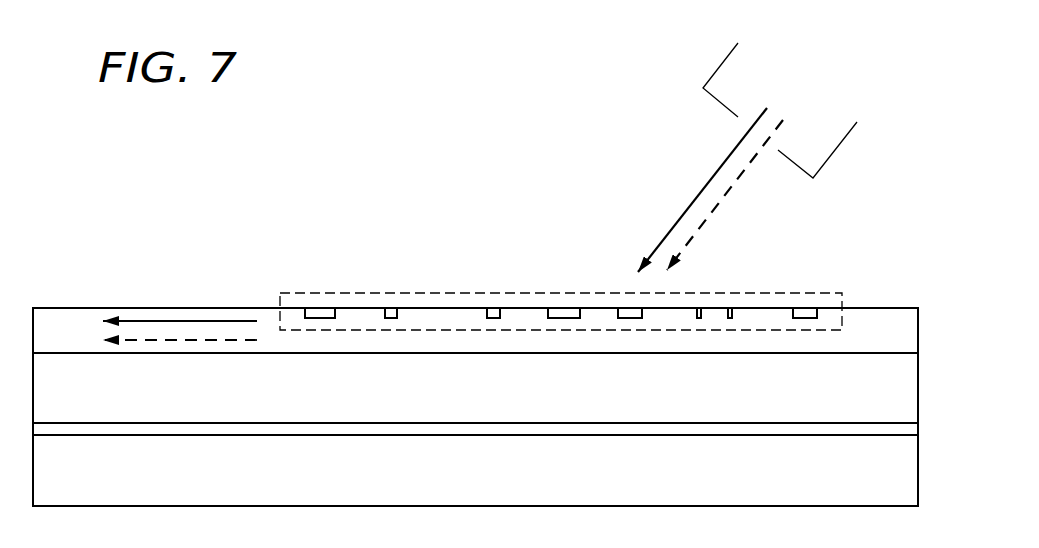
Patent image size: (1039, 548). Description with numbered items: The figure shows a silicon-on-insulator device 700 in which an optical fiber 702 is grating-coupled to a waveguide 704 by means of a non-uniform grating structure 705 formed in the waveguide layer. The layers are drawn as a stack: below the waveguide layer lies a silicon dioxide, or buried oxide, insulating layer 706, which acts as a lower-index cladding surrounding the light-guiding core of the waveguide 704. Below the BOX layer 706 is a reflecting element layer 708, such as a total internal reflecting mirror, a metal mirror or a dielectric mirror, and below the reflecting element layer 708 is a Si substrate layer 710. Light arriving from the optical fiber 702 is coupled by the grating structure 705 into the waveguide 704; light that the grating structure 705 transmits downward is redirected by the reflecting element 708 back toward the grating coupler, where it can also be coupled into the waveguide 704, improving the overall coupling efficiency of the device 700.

The device 700 is at (228, 167).
The optical fiber 702 is at (718, 63).
The waveguide 704 is at (918, 330).
The non-uniform grating structure 705 is at (317, 292).
The buried oxide (BOX) insulating layer 706 is at (918, 392).
The reflecting element layer 708 is at (918, 430).
The Si substrate layer 710 is at (918, 477).